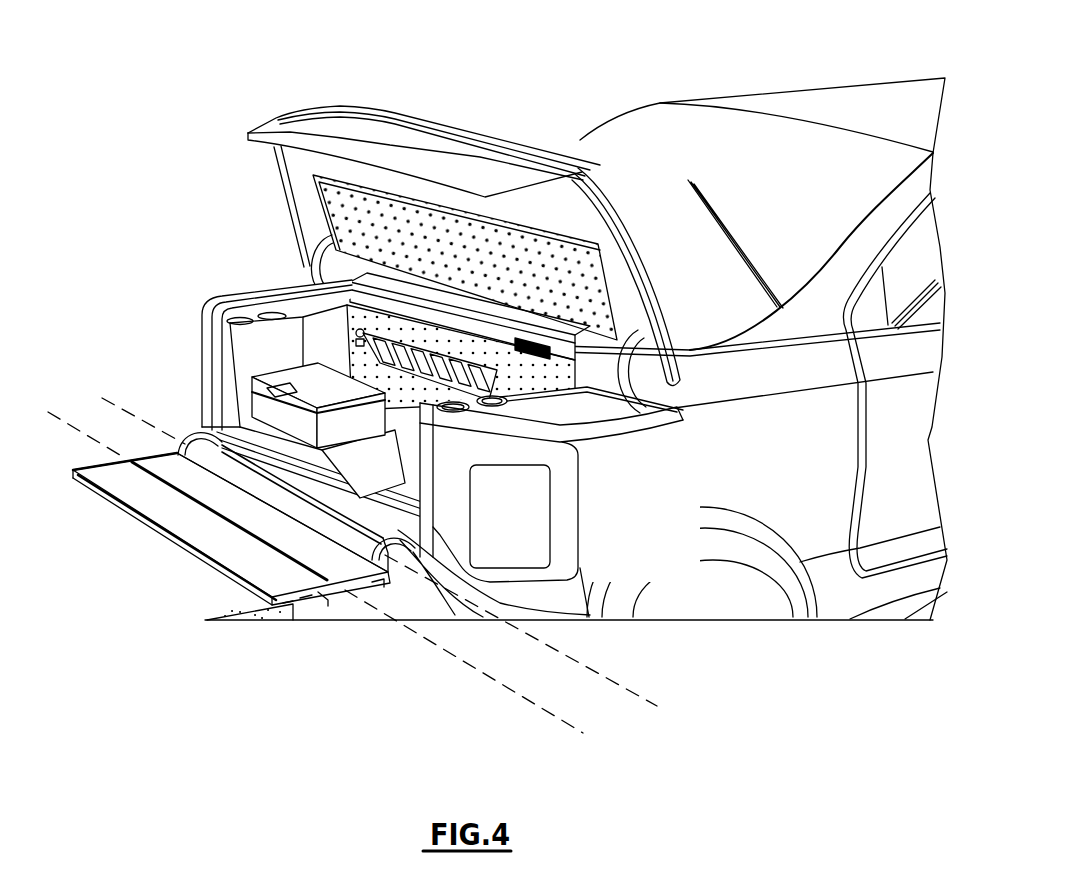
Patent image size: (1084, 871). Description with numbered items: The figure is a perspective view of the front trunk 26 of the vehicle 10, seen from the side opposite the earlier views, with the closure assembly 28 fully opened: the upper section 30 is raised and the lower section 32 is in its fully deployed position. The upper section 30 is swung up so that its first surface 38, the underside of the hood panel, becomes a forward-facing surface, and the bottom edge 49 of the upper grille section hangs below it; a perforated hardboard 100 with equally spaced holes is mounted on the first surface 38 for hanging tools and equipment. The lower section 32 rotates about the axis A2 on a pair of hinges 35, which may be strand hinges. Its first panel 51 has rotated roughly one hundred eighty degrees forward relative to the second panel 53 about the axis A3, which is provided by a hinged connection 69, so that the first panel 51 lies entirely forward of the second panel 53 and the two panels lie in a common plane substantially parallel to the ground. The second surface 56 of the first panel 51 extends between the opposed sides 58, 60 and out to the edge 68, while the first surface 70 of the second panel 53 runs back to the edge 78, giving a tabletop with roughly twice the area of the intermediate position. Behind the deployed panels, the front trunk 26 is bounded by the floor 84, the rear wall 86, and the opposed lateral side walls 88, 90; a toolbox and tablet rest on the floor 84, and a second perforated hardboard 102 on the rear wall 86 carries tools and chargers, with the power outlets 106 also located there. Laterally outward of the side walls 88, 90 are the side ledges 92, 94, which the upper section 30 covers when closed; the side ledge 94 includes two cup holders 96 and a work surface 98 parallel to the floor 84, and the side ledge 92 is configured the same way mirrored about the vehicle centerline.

The vehicle 10 is at (166, 64).
The closure assembly 28 is at (148, 162).
The upper section 30 is at (265, 102).
The first surface 38 is at (550, 213).
The bottom edge 49 is at (293, 143).
The perforated hardboard 100 is at (328, 207).
The side ledge 92 is at (200, 297).
The lateral side wall 88 is at (257, 340).
The front trunk 26 is at (238, 359).
The floor 84 is at (380, 397).
The hinges 35 is at (202, 432).
The first surface 70 is at (153, 456).
The second surface 56 is at (110, 472).
The side 58 is at (72, 475).
The hinged connection 69 is at (213, 513).
The edge 68 is at (200, 555).
The first panel 51 is at (288, 615).
The side 60 is at (307, 596).
The lower section 32 is at (324, 610).
The second panel 53 is at (384, 600).
The edge 78 is at (346, 503).
The lateral side wall 90 is at (420, 405).
The cup holders 96 is at (486, 408).
The work surface 98 is at (547, 413).
The side ledge 94 is at (637, 428).
The rear wall 86 is at (642, 398).
The perforated hardboard 102 is at (566, 374).
The power outlets 106 is at (543, 325).
The axis A2 is at (621, 686).
The axis A3 is at (520, 698).